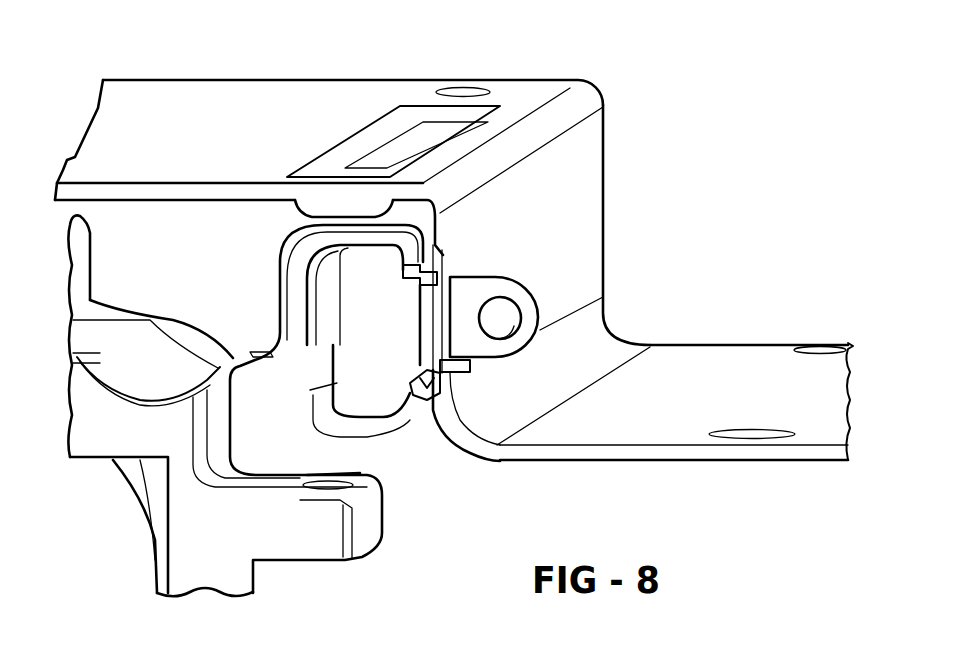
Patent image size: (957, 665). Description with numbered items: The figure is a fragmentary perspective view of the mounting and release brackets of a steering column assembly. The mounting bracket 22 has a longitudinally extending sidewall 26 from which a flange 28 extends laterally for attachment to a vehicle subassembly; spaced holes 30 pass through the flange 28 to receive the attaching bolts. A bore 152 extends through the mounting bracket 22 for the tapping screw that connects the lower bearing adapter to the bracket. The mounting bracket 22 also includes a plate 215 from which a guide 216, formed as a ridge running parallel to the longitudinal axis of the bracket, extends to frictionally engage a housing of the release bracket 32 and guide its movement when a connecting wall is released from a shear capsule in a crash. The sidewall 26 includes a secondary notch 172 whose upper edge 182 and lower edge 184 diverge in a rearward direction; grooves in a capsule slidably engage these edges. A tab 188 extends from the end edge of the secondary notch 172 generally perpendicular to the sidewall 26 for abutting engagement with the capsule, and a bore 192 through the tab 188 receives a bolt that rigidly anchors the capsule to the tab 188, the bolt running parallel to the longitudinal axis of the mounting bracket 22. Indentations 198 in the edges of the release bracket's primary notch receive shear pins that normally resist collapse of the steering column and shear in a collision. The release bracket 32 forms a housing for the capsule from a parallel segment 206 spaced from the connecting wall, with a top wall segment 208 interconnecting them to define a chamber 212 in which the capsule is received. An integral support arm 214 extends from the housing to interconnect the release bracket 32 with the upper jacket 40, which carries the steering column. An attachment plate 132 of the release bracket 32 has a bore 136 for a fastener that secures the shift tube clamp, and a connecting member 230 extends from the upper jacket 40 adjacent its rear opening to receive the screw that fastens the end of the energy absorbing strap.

The mounting bracket 22 is at (345, 78).
The plate 215 is at (247, 94).
The guide 216 is at (407, 114).
The bore 152 is at (466, 90).
The sidewall 26 is at (593, 218).
The flange 28 is at (708, 343).
The holes 30 is at (812, 350).
The connecting member 230 is at (104, 242).
The support arm 214 is at (262, 345).
The release bracket 32 is at (272, 343).
The parallel segment 206 is at (278, 268).
The top wall segment 208 is at (328, 228).
The chamber 212 is at (336, 327).
The lower edge 184 is at (415, 386).
The indentations 198 is at (440, 265).
The upper edge 182 is at (453, 268).
The tab 188 is at (540, 298).
The bore 192 is at (520, 318).
The secondary notch 172 is at (460, 404).
The bore 136 is at (367, 488).
The attachment plate 132 is at (333, 563).
The upper jacket 40 is at (272, 576).